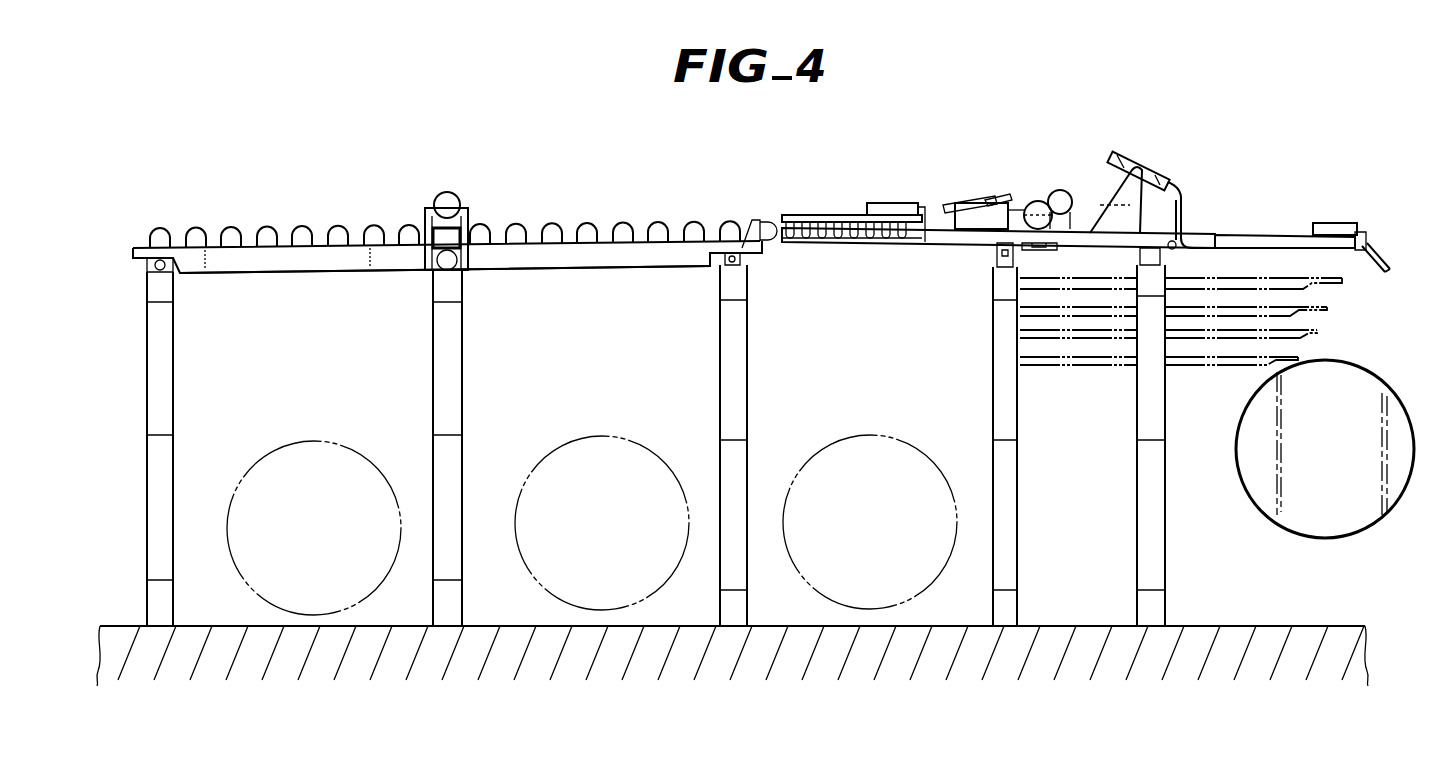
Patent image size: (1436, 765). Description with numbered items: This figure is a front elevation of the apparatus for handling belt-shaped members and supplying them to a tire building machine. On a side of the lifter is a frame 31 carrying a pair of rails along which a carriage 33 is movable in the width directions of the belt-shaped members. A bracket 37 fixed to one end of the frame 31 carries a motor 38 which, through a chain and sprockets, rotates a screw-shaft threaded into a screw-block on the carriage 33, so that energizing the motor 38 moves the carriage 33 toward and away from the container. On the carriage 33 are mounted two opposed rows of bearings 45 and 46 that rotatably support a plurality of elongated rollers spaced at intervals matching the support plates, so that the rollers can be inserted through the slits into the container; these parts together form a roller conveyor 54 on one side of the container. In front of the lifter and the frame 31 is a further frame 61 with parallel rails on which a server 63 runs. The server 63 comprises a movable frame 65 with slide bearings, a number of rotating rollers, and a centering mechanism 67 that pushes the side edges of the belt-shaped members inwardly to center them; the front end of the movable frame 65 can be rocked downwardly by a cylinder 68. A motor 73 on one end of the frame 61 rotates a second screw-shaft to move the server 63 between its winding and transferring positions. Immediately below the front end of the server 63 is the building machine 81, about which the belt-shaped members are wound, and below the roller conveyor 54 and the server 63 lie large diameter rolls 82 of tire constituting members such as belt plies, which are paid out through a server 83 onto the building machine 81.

The frame 31 is at (450, 380).
The carriage 33 is at (287, 272).
The bracket 37 is at (425, 214).
The motor 38 is at (456, 208).
The bearings 45 is at (445, 211).
The bearings 46 is at (204, 240).
The roller conveyor 54 is at (357, 272).
The frame 61 is at (1018, 410).
The server 63 is at (1220, 226).
The movable frame 65 is at (942, 246).
The centering mechanism 67 is at (828, 244).
The cylinder 68 is at (1125, 164).
The motor 73 is at (1036, 201).
The building machine 81 is at (1238, 426).
The large diameter rolls 82 is at (352, 455).
The server 83 is at (1320, 310).